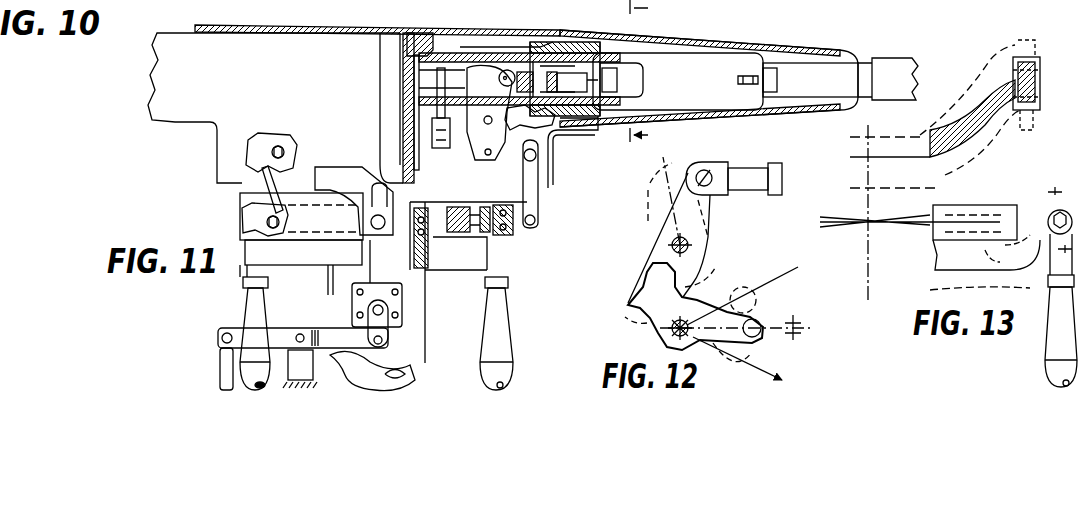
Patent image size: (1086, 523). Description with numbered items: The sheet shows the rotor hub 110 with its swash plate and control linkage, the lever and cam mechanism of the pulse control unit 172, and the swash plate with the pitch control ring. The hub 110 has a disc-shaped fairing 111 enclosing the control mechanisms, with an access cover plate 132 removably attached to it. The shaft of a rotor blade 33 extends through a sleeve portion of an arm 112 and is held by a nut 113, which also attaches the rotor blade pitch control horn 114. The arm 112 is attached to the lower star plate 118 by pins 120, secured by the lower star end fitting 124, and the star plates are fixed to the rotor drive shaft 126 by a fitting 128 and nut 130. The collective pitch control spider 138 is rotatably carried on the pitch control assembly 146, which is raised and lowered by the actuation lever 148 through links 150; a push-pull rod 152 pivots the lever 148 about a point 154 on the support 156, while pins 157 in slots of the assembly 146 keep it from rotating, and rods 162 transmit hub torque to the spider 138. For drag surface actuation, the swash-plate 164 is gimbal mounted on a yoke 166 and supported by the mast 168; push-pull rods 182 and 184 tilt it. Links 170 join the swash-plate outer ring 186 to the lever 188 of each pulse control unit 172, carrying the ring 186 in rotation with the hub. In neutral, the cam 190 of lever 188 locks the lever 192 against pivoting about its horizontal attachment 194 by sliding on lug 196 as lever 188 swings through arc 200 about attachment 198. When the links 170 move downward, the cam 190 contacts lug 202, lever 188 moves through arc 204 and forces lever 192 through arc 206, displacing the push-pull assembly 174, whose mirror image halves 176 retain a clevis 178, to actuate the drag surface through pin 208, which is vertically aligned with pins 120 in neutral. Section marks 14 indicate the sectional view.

In FIG. 11, the section line 14 is at (651, 72).
In FIG. 11, the rotor blade 33 is at (893, 56).
In FIG. 11, the rotor hub 110 is at (178, 157).
In FIG. 11, the disc-shaped fairing 111 is at (175, 120).
In FIG. 11, the arm 112 is at (715, 58).
In FIG. 11, the nut 113 is at (630, 83).
In FIG. 11, the rotor blade pitch control horn 114 is at (645, 56).
In FIG. 11, the lower star plate 118 is at (414, 90).
In FIG. 11, the pins 120 is at (563, 137).
In FIG. 11, the lower star end fitting 124 is at (530, 122).
In FIG. 11, the rotor drive shaft 126 is at (415, 375).
In FIG. 11, the fitting 128 is at (403, 60).
In FIG. 11, the nut 130 is at (410, 32).
In FIG. 11, the access cover plate 132 is at (252, 25).
In FIG. 11, the rotor blade collective pitch control spider 138 is at (452, 166).
In FIG. 13, the rotor blade collective pitch control spider 138 is at (1040, 80).
In FIG. 11, the pitch control assembly 146 is at (402, 302).
In FIG. 11, the actuation lever 148 is at (226, 327).
In FIG. 11, the links 150 is at (386, 327).
In FIG. 11, the push-pull rod 152 is at (220, 380).
In FIG. 11, the pivot point 154 is at (300, 333).
In FIG. 11, the support 156 is at (307, 366).
In FIG. 11, the pins 157 is at (354, 201).
In FIG. 11, the rods 162 is at (441, 66).
In FIG. 11, the swash-plate 164 is at (235, 217).
In FIG. 13, the swash-plate 164 is at (936, 265).
In FIG. 11, the yoke 166 is at (429, 247).
In FIG. 11, the mast 168 is at (425, 287).
In FIG. 11, the links 170 is at (538, 215).
In FIG. 11, the pulse control unit 172 is at (542, 152).
In FIG. 12, the pulse control unit 172 is at (642, 194).
In FIG. 11, the push-pull assembly 174 is at (572, 55).
In FIG. 11, the upper and lower halves 176 is at (548, 42).
In FIG. 12, the clevis 178 is at (742, 170).
In FIG. 11, the push-pull rod 182 is at (250, 297).
In FIG. 11, the push-pull rod 184 is at (504, 303).
In FIG. 13, the push-pull rod 184 is at (1061, 287).
In FIG. 11, the swash-plate outer ring 186 is at (518, 228).
In FIG. 11, the lever 188 is at (538, 183).
In FIG. 12, the lever 188 is at (697, 343).
In FIG. 12, the cam 190 is at (637, 315).
In FIG. 11, the lever 192 is at (480, 64).
In FIG. 12, the lever 192 is at (710, 208).
In FIG. 12, the horizontal attachment 194 is at (690, 243).
In FIG. 12, the lug 196 is at (628, 273).
In FIG. 12, the attachment 198 is at (665, 333).
In FIG. 12, the arc 200 is at (737, 303).
In FIG. 12, the lug 202 is at (715, 268).
In FIG. 12, the arc 204 is at (749, 358).
In FIG. 12, the arc 206 is at (713, 152).
In FIG. 11, the pin 208 is at (560, 118).